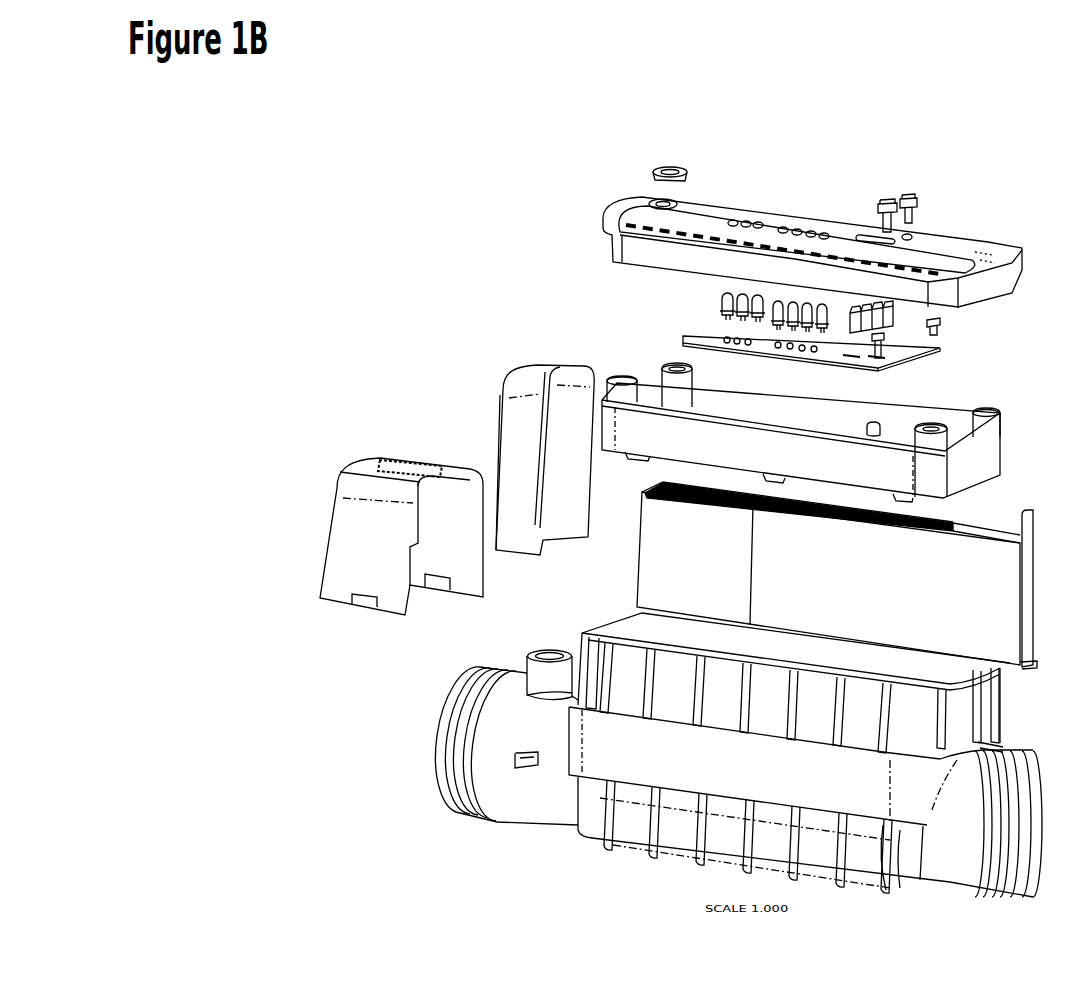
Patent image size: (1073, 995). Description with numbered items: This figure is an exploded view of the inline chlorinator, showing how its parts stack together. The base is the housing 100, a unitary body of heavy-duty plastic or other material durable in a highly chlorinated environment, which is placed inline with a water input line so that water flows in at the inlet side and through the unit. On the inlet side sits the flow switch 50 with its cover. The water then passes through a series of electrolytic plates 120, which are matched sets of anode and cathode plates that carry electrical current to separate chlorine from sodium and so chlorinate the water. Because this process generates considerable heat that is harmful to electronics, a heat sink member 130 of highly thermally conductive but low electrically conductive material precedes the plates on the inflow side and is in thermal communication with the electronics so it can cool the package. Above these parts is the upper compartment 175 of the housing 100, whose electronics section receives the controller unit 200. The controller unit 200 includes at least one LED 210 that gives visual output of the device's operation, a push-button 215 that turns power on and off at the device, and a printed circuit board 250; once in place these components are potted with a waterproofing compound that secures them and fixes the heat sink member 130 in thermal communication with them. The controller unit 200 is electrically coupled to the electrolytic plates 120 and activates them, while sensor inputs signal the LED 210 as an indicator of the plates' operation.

The controller unit 200 is at (573, 200).
The push-button 215 is at (886, 200).
The LED 210 is at (777, 305).
The printed circuit board 250 is at (940, 348).
The upper compartment 175 is at (660, 363).
The heat sink member 130 is at (497, 437).
The flow switch 50 is at (330, 490).
The electrolytic plates 120 is at (675, 542).
The housing 100 is at (523, 744).